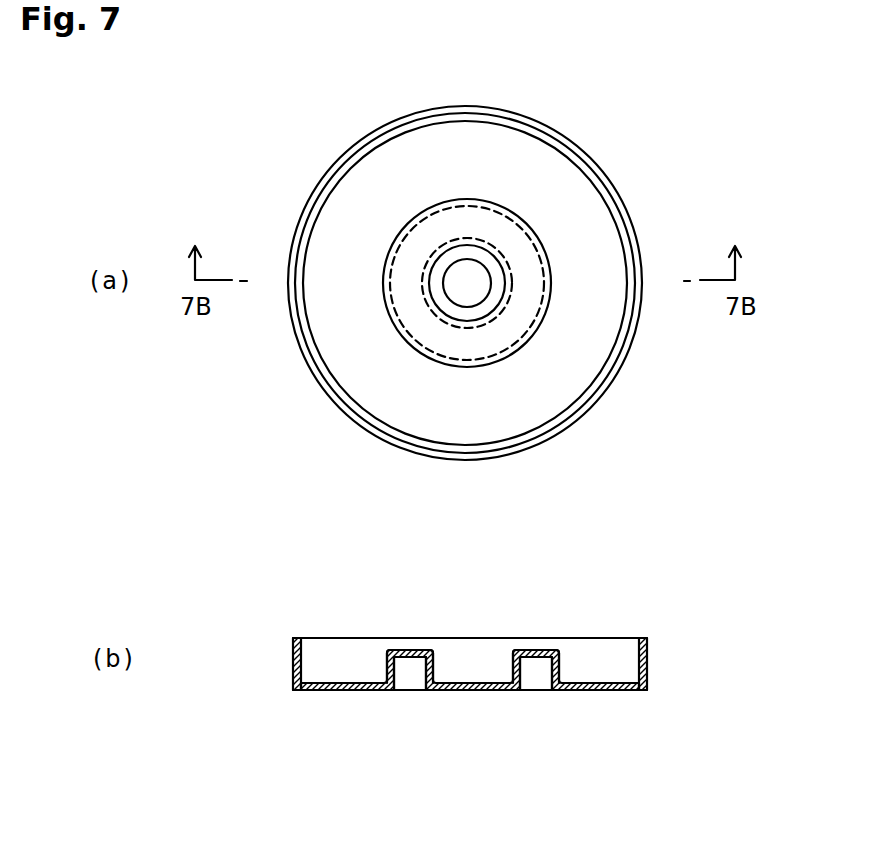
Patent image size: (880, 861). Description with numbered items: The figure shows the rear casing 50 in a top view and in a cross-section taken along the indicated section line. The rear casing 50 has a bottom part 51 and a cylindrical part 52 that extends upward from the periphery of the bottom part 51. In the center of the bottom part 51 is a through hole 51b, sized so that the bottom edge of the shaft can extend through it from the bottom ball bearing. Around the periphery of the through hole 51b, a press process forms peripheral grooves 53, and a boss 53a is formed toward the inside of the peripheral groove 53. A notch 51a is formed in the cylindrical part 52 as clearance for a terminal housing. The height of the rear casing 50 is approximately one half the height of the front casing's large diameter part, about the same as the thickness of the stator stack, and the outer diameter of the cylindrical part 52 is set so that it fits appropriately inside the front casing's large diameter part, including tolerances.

The rear casing 50 is at (483, 409).
The bottom part 51 is at (568, 380).
The notch 51a is at (632, 220).
The through hole 51b is at (474, 277).
The cylindrical part 52 is at (413, 213).
The peripheral groove 53 is at (533, 667).
The boss 53a is at (427, 658).